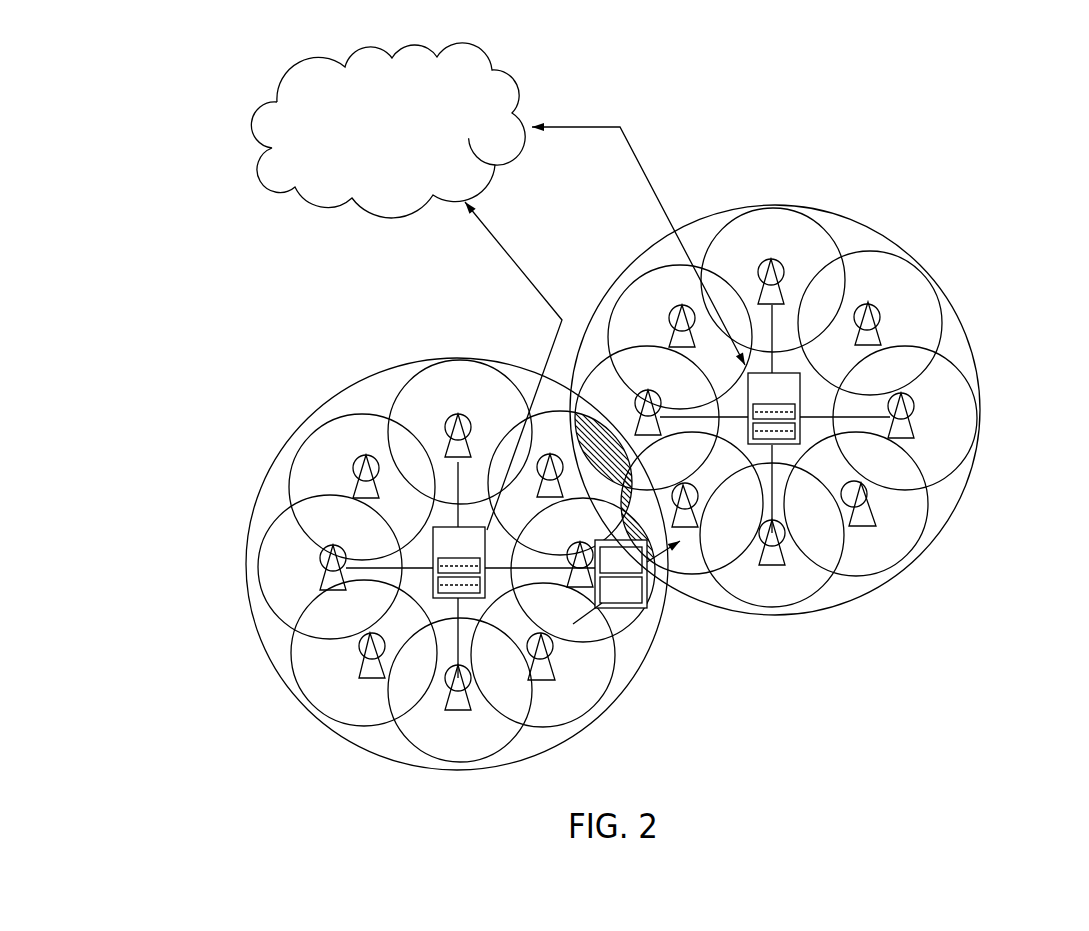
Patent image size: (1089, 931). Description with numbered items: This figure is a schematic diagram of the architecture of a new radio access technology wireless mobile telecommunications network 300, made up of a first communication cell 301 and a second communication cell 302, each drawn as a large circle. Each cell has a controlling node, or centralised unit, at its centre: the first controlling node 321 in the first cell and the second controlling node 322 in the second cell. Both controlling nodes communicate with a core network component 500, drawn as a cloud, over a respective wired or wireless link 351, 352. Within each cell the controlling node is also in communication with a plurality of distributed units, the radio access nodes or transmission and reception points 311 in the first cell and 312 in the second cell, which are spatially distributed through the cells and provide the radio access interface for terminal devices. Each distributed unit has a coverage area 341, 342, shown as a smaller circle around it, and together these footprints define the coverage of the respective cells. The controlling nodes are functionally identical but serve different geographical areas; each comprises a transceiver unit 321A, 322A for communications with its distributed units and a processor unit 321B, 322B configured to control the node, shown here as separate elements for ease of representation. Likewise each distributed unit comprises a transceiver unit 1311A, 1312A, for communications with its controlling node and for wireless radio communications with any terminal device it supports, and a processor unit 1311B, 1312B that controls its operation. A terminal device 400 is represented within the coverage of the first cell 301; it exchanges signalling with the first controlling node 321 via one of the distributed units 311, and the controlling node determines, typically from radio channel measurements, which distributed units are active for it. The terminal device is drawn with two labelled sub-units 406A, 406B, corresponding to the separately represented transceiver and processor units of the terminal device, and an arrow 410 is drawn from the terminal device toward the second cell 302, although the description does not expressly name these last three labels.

The new RAT wireless mobile telecommunications network/system 300 is at (770, 99).
The first communication cell 301 is at (382, 371).
The second communication cell 302 is at (778, 206).
The distributed units 311 is at (449, 600).
The distributed units 312 is at (857, 437).
The first controlling node 321 is at (319, 551).
The transceiver unit 321A is at (433, 563).
The processor unit 321B is at (433, 587).
The second controlling node 322 is at (907, 413).
The transceiver unit 322A is at (800, 410).
The processor unit 322B is at (800, 430).
The coverage area 341 is at (268, 527).
The coverage area 342 is at (869, 251).
The wired or wireless link 351 is at (510, 250).
The wired or wireless link 352 is at (587, 126).
The terminal device 400 is at (634, 617).
The first transceiver of user equipment 406A is at (621, 560).
The second transceiver of user equipment 406B is at (621, 590).
The handover / movement direction 410 is at (684, 548).
The core network component 500 is at (413, 136).
The transceiver unit 1311A is at (555, 657).
The processor unit 1311B is at (555, 673).
The transceiver unit 1312A is at (866, 494).
The processor unit 1312B is at (868, 518).